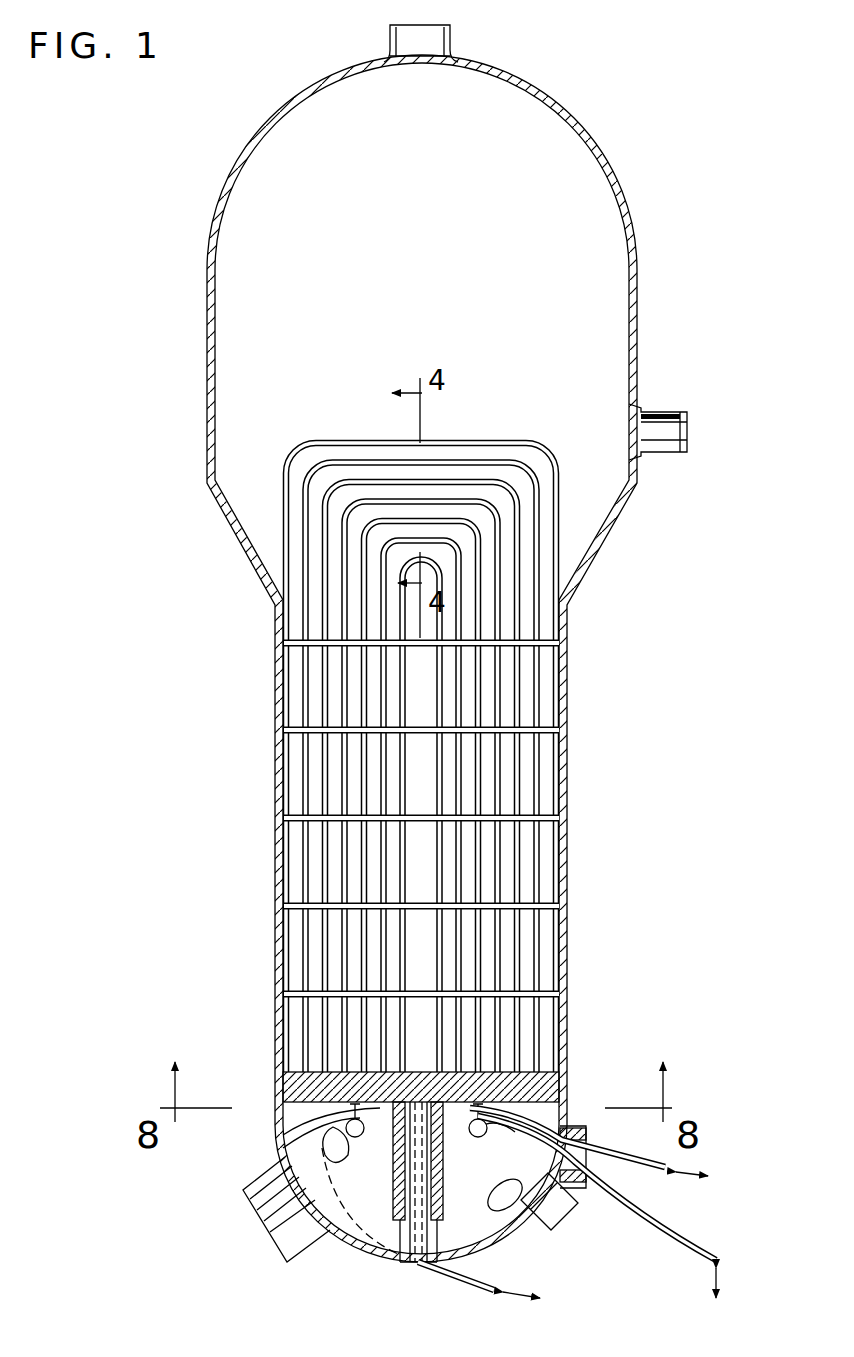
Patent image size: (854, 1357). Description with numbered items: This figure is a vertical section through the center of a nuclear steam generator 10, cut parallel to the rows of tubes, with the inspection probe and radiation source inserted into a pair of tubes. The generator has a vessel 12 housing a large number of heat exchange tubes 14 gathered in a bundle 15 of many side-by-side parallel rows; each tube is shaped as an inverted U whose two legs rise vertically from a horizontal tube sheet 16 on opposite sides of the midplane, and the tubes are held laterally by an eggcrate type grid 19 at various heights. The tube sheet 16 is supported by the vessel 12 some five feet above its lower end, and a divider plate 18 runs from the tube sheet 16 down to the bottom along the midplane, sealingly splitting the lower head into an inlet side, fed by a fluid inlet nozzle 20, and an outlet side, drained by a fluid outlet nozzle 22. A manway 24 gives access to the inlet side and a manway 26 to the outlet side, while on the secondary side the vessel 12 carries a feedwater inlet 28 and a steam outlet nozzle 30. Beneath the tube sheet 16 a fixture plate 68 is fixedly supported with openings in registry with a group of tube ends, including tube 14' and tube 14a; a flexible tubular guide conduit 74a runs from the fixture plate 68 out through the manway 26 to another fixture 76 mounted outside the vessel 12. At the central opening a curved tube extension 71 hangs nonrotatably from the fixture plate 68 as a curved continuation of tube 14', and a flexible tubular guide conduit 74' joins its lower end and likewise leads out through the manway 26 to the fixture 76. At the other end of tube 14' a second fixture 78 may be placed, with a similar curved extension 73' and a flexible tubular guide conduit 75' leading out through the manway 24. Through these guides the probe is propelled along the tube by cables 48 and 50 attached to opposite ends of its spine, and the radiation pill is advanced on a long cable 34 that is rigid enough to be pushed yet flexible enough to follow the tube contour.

The nuclear steam generator 10 is at (641, 120).
The vessel 12 is at (622, 172).
The heat exchange tubes 14 is at (394, 732).
The tube 14' is at (558, 855).
The tube 14a is at (520, 970).
The bundle 15 is at (433, 732).
The tube sheet 16 is at (300, 1075).
The divider plate 18 is at (405, 1176).
The eggcrate type grid 19 is at (545, 725).
The fluid inlet nozzle 20 is at (245, 1198).
The fluid outlet nozzle 22 is at (530, 1230).
The manway 24 is at (292, 1176).
The manway 26 is at (570, 1128).
The feedwater inlet 28 is at (672, 410).
The steam outlet nozzle 30 is at (456, 46).
The cable 34 is at (672, 1170).
The cable 48 is at (480, 1290).
The cable 50 is at (722, 1256).
The fixture plate 68 is at (560, 1105).
The curved tube extension 71 is at (486, 1140).
The extension 73' is at (284, 1133).
The flexible tubular guide conduit 74a is at (590, 1160).
The flexible tubular guide conduit 74' is at (615, 1188).
The flexible tubular guide conduit 75' is at (389, 1280).
The fixture 76 is at (565, 1190).
The fixture 78 is at (300, 1115).